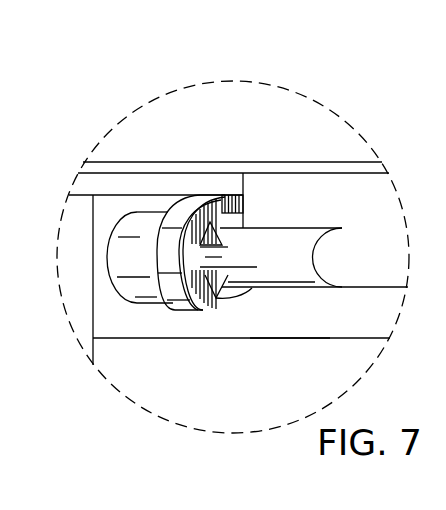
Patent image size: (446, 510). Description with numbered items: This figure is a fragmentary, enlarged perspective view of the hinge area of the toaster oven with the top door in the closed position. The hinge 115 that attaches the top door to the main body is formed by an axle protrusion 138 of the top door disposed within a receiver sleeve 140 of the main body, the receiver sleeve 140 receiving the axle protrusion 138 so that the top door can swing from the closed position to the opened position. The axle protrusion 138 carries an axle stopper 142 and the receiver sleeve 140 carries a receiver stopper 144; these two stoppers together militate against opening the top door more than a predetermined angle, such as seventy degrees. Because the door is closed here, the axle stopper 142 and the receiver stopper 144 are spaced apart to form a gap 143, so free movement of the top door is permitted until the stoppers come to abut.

The hinge 115 is at (285, 313).
The axle protrusion 138 is at (295, 250).
The receiver sleeve 140 is at (178, 211).
The axle stopper 142 is at (243, 222).
The gap 143 is at (205, 257).
The receiver stopper 144 is at (233, 300).